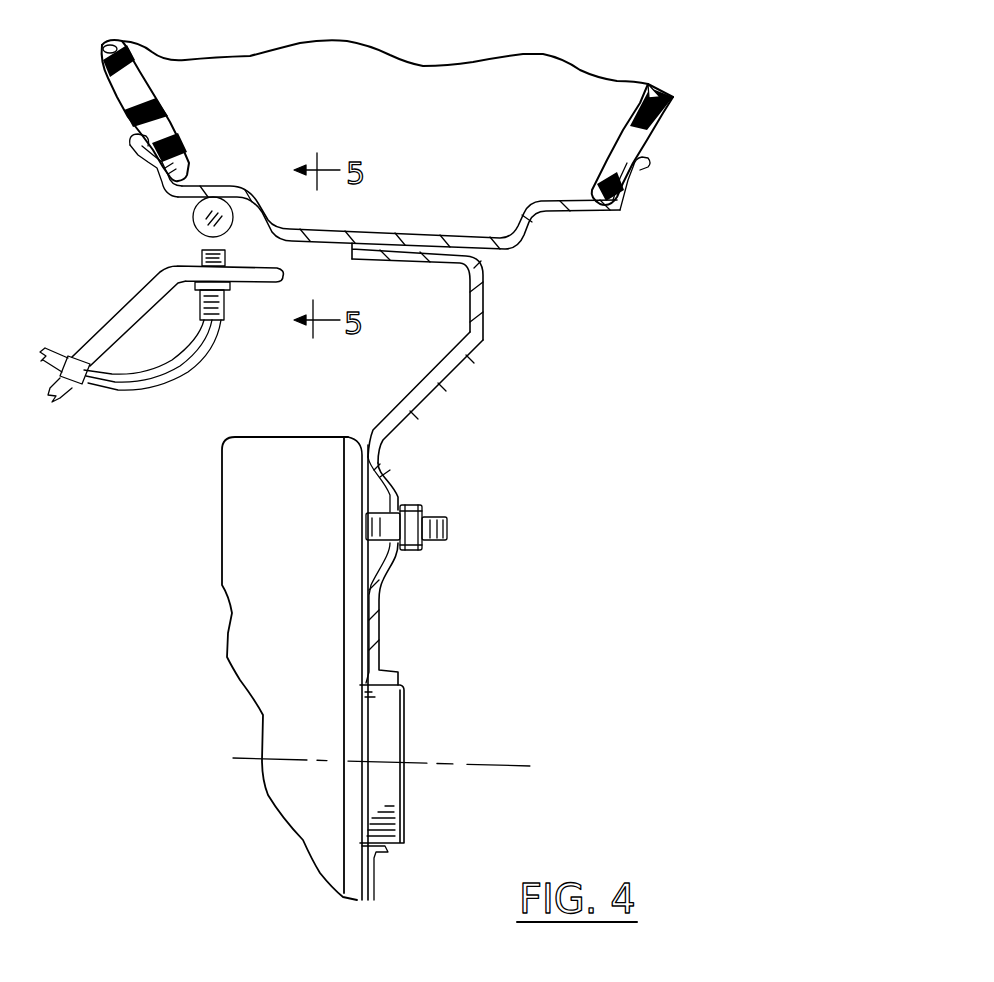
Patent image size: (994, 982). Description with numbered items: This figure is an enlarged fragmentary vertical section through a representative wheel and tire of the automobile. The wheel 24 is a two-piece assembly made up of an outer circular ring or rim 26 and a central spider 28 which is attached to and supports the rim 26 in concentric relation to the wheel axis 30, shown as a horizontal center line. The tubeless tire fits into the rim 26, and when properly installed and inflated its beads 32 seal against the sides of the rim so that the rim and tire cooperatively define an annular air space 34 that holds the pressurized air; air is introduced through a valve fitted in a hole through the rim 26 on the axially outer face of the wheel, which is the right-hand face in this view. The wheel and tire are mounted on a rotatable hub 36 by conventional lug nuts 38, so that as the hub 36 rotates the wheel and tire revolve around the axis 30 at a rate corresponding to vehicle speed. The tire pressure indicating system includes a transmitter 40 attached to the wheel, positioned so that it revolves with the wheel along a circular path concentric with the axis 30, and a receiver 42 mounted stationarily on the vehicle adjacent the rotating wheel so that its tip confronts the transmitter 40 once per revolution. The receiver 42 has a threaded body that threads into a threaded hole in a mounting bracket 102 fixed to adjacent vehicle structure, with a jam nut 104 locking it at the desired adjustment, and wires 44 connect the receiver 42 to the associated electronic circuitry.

The annular air space 34 is at (387, 122).
The tire beads 32 is at (177, 163).
The outer circular ring (rim) 26 is at (515, 228).
The central spider 28 is at (478, 307).
The wheel 24 is at (479, 346).
The transmitter 40 is at (193, 217).
The receiver 42 is at (227, 254).
The mounting bracket 102 is at (133, 310).
The jam nut 104 is at (232, 288).
The wires 44 is at (130, 400).
The rotatable hub 36 is at (320, 437).
The lug nuts 38 is at (420, 505).
The wheel axis 30 is at (506, 760).